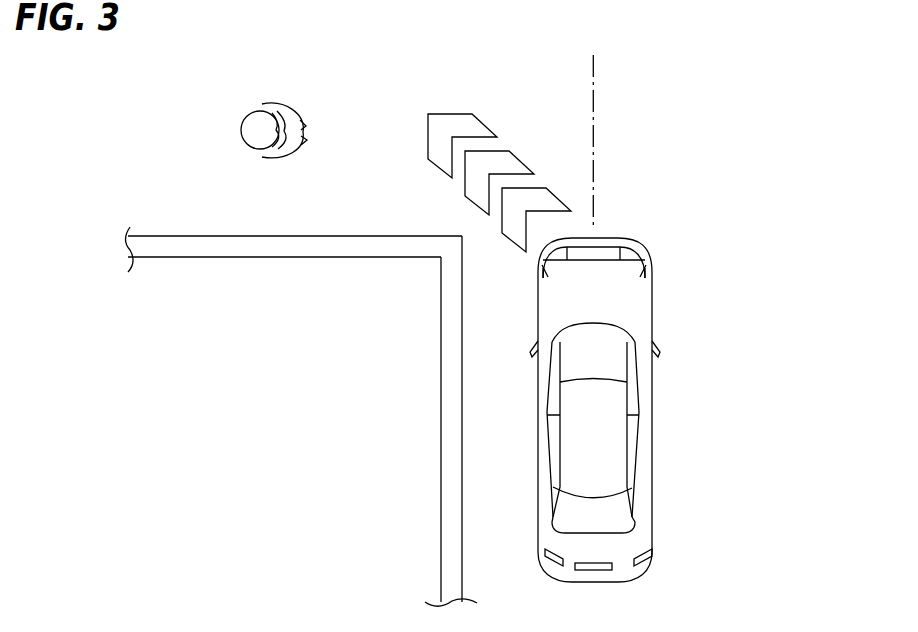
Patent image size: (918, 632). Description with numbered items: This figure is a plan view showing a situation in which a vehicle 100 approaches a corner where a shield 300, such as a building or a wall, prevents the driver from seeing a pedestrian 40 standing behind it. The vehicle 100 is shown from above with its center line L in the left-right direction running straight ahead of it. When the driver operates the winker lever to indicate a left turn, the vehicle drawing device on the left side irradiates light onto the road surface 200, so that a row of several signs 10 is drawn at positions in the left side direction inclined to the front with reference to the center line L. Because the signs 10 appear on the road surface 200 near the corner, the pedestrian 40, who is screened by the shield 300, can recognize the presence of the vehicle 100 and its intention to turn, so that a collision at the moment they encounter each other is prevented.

The sign 10 is at (460, 117).
The pedestrian 40 is at (250, 128).
The vehicle 100 is at (638, 317).
The road surface 200 is at (313, 217).
The shield 300 is at (452, 538).
The center line L is at (593, 108).